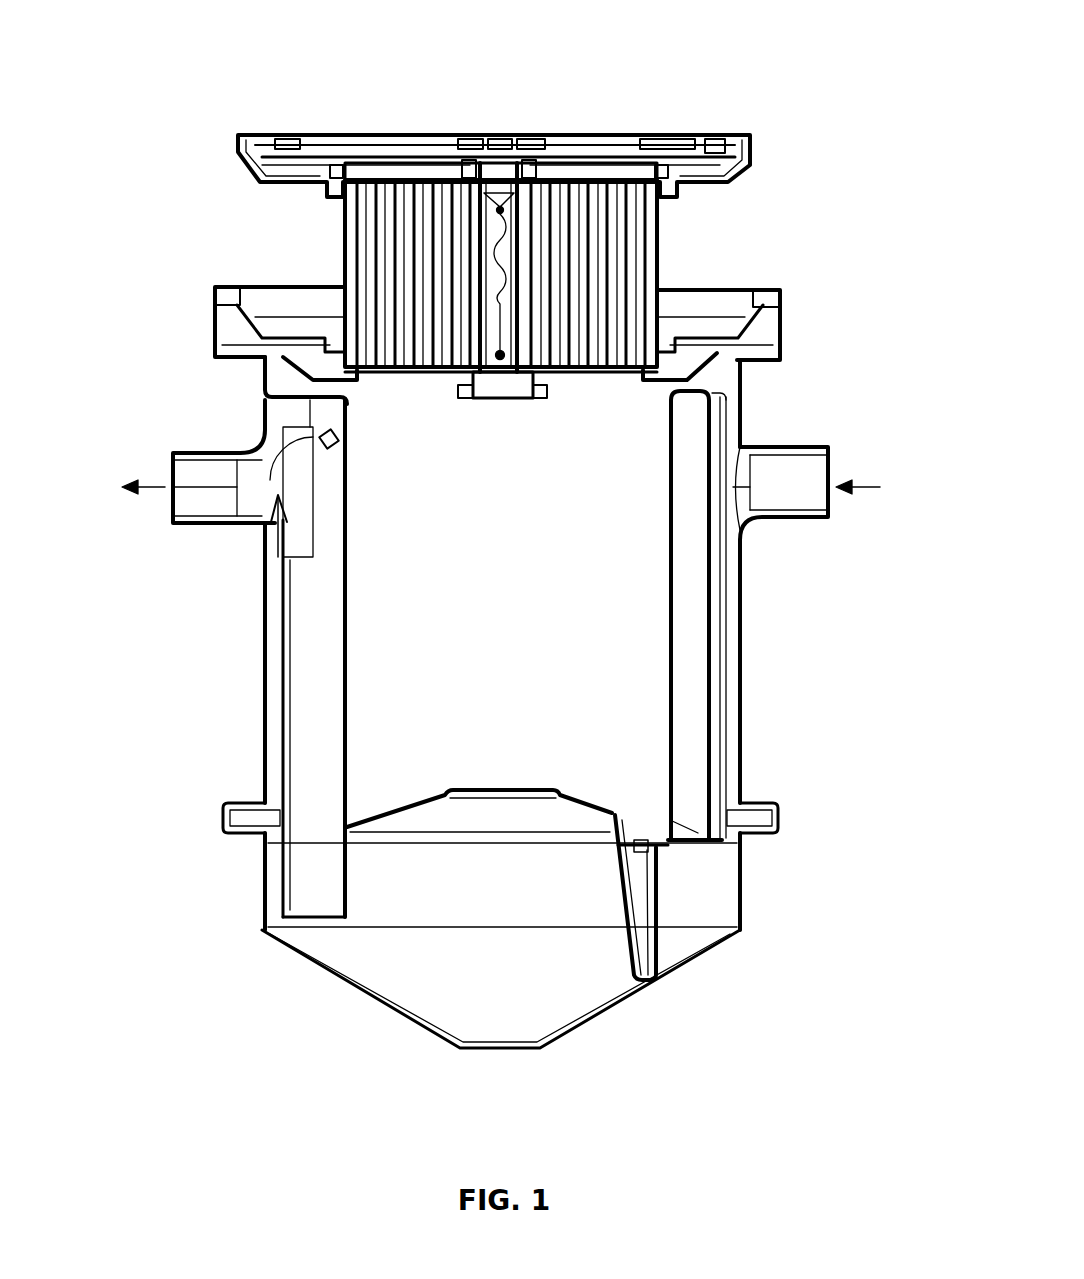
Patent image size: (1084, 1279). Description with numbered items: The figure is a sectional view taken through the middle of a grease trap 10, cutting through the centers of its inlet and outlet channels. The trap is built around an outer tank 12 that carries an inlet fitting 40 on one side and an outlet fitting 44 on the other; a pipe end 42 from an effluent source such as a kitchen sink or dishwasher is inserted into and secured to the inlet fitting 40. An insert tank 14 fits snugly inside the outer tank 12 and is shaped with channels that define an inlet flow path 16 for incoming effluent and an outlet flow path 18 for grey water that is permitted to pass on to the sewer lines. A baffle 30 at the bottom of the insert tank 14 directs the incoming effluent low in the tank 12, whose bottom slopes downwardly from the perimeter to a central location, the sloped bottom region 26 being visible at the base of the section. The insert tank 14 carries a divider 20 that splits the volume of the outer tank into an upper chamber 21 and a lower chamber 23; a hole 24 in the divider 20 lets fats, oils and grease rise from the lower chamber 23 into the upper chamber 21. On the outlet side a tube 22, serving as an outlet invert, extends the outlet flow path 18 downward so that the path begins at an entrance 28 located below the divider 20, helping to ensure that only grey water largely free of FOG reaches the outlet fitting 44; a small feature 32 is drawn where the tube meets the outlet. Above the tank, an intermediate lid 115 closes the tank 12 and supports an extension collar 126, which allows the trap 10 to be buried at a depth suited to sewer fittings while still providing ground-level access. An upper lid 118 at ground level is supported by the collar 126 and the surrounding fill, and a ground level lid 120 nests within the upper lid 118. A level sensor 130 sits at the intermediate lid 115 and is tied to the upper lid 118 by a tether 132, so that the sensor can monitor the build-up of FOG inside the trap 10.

The grease trap 10 is at (133, 78).
The outer tank 12 is at (265, 630).
The insert tank 14 is at (670, 697).
The inlet flow path 16 is at (693, 630).
The outlet flow path 18 is at (305, 700).
The divider 20 is at (578, 803).
The upper chamber 21 is at (491, 627).
The tube 22 is at (280, 780).
The lower chamber 23 is at (491, 901).
The hole 24 is at (498, 782).
The conical bottom 26 is at (607, 1017).
The entrance 28 is at (305, 925).
The baffle 30 is at (655, 905).
The baffle 32 is at (278, 498).
The inlet fitting 40 is at (793, 445).
The pipe end 42 is at (800, 507).
The outlet fitting 44 is at (203, 452).
The intermediate lid 115 is at (737, 327).
The upper lid 118 is at (240, 143).
The ground level lid 120 is at (287, 133).
The extension collar 126 is at (343, 238).
The level sensor 130 is at (502, 382).
The tether 132 is at (507, 273).